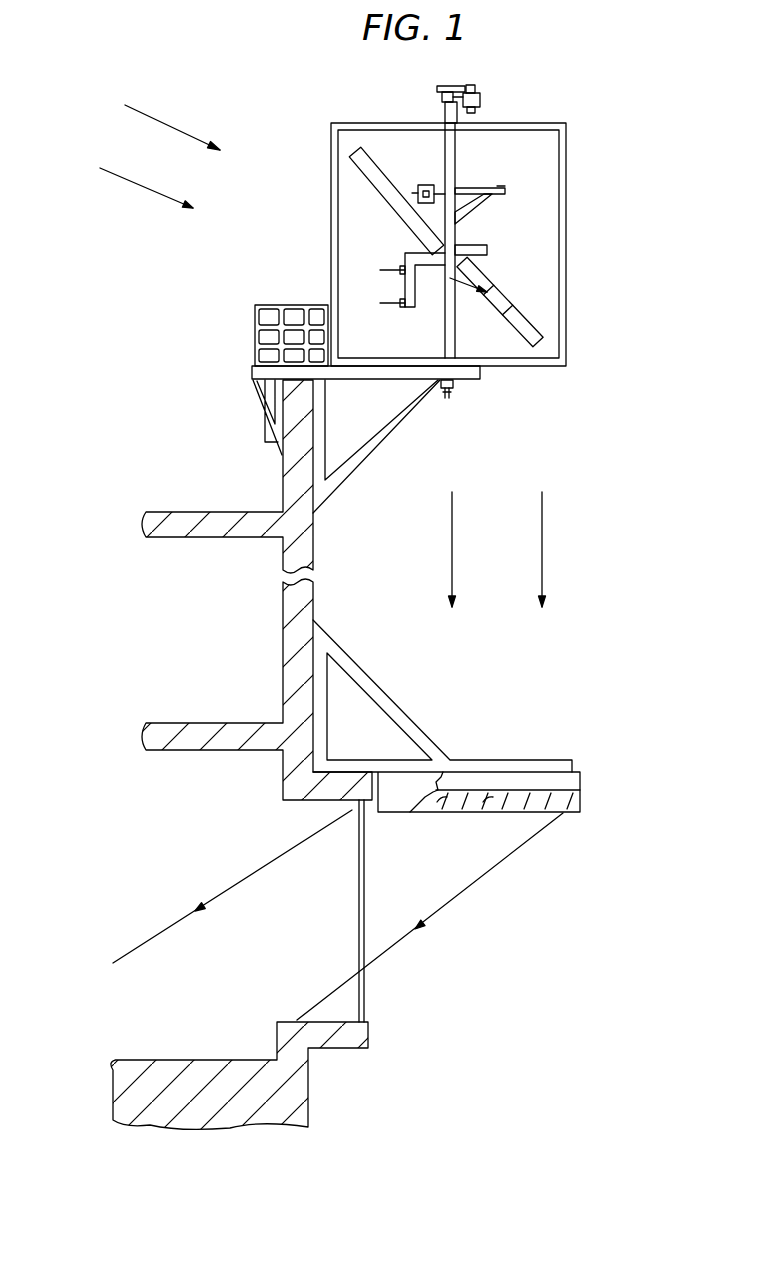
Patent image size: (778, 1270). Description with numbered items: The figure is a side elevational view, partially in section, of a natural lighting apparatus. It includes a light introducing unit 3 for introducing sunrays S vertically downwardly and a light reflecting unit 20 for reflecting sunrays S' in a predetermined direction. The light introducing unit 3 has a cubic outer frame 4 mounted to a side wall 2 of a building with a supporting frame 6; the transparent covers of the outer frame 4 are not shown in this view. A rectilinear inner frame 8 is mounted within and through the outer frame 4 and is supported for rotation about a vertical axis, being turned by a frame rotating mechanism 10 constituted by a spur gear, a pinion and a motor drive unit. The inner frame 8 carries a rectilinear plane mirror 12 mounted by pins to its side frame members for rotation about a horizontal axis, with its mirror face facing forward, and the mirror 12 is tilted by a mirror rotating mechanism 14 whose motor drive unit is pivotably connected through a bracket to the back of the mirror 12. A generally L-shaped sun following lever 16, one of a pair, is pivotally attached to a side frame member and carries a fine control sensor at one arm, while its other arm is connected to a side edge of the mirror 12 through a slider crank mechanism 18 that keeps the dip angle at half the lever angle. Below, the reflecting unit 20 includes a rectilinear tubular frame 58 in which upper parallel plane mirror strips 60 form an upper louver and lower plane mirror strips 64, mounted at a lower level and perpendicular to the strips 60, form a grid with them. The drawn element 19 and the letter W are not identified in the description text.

The side wall 2 is at (315, 607).
The light introducing unit 3 is at (575, 152).
The outer frame 4 is at (567, 233).
The supporting frame 6 is at (405, 418).
The inner frame 8 is at (453, 326).
The frame rotating mechanism 10 is at (486, 86).
The plane mirror 12 is at (392, 194).
The mirror rotating mechanism 14 is at (472, 180).
The sun following lever 16 is at (407, 256).
The slider crank mechanism 18 is at (490, 270).
The angle bracket 19 is at (413, 721).
The light reflecting unit 20 is at (590, 772).
The tubular frame 58 is at (583, 808).
The upper plane mirror strips 60 is at (513, 782).
The lower plane mirror strips 64 is at (483, 802).
The sunrays S is at (150, 152).
The sunrays S' is at (497, 530).
The wire W is at (367, 1003).